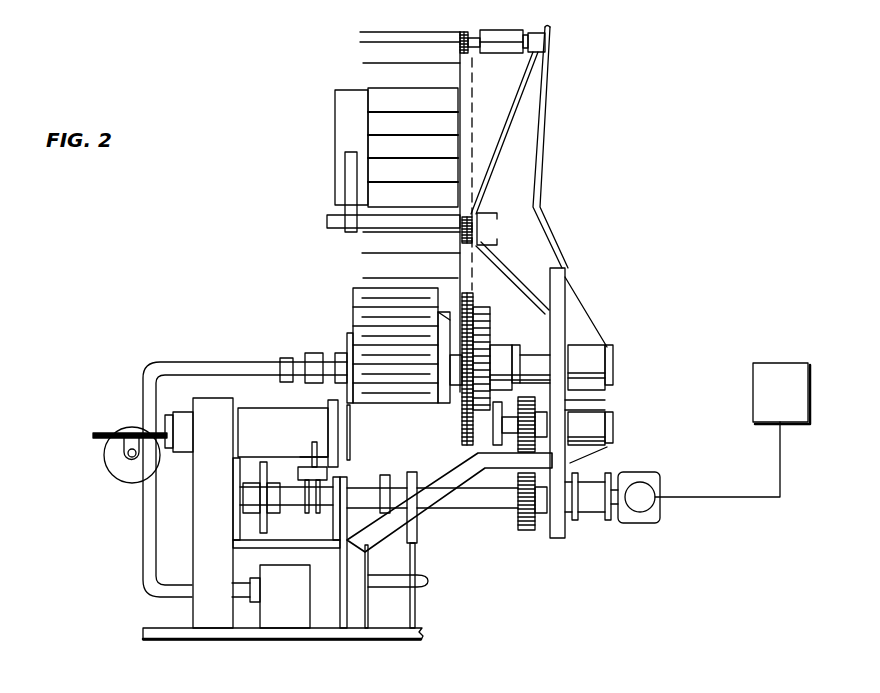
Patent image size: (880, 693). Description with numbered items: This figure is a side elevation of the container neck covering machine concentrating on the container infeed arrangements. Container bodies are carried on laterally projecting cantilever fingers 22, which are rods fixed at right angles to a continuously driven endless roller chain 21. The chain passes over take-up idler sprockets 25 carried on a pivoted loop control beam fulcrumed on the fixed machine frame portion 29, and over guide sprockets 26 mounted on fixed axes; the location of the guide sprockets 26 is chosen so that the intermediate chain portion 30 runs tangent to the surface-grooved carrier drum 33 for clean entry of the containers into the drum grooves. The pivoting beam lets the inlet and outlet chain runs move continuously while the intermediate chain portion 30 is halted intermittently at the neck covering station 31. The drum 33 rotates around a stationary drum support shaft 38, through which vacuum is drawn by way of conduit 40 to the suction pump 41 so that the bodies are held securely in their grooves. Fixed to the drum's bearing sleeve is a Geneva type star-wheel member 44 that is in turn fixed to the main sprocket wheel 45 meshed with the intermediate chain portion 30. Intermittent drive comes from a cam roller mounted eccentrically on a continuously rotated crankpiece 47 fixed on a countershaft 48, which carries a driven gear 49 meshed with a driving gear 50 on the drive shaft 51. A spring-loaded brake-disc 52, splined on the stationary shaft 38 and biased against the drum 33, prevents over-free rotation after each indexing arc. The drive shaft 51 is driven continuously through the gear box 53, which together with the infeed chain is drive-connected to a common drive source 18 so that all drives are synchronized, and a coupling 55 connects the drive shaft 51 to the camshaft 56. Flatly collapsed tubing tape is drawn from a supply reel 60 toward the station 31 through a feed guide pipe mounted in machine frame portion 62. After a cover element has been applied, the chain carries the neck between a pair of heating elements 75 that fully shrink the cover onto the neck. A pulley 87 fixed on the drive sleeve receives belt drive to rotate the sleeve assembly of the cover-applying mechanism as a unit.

The common drive source 18 is at (795, 363).
The endless chain 21 is at (472, 103).
The cantilever fingers 22 is at (364, 63).
The take-up idler sprockets 25 is at (471, 219).
The guide sprockets 26 is at (465, 31).
The fixed machine frame portion 29 is at (533, 137).
The intermediate chain portion 30 is at (458, 267).
The container neck covering station 31 is at (282, 443).
The drum 33 is at (357, 311).
The stationary drum support shaft 38 is at (538, 358).
The conduit 40 is at (213, 362).
The suction pump 41 is at (293, 606).
The Geneva type star-wheel member 44 is at (484, 306).
The main sprocket wheel 45 is at (476, 306).
The crankpiece 47 is at (502, 446).
The countershaft 48 is at (548, 431).
The driven gear 49 is at (535, 408).
The driving gear 50 is at (528, 528).
The drive shaft 51 is at (458, 495).
The spring-loaded brake-disc 52 is at (348, 345).
The gear box 53 is at (650, 522).
The coupling 55 is at (393, 480).
The camshaft 56 is at (292, 502).
The supply reel 60 is at (118, 473).
The machine frame portion 62 is at (224, 499).
The heating elements 75 is at (347, 113).
The pulley 87 is at (347, 420).